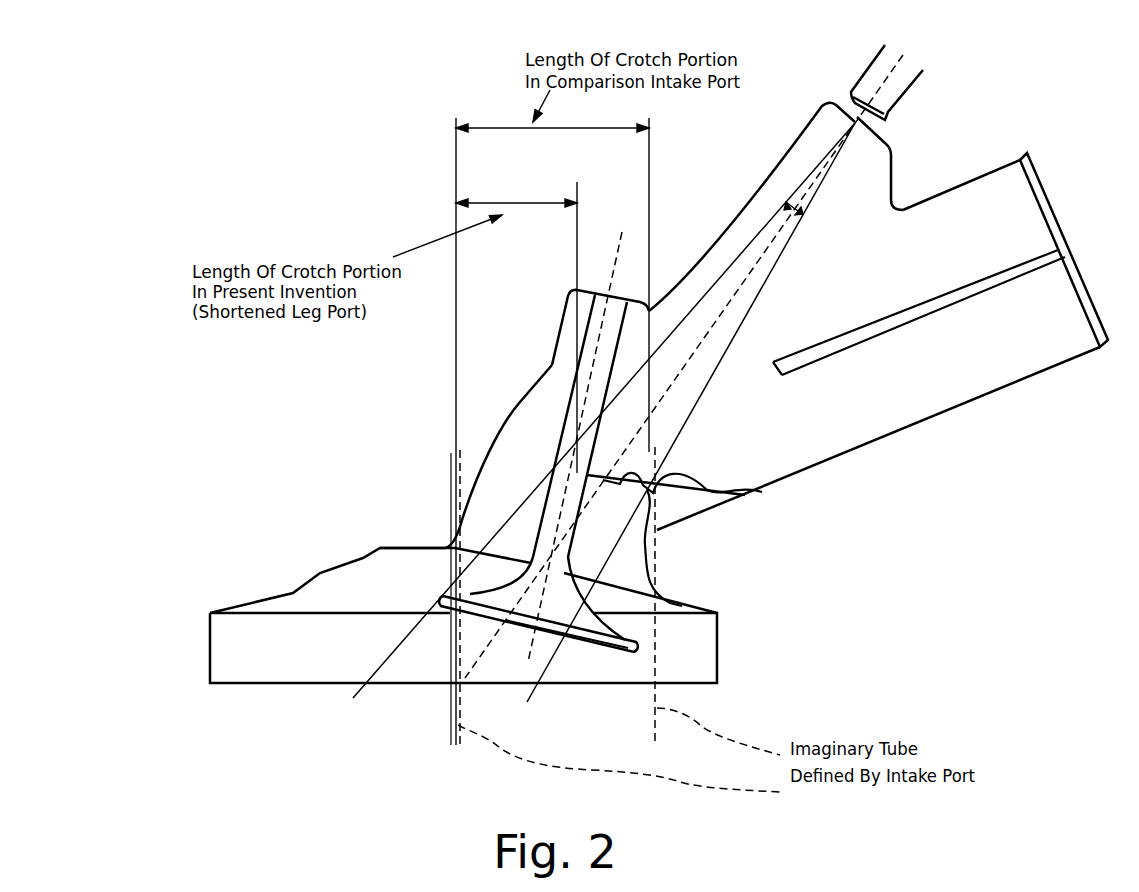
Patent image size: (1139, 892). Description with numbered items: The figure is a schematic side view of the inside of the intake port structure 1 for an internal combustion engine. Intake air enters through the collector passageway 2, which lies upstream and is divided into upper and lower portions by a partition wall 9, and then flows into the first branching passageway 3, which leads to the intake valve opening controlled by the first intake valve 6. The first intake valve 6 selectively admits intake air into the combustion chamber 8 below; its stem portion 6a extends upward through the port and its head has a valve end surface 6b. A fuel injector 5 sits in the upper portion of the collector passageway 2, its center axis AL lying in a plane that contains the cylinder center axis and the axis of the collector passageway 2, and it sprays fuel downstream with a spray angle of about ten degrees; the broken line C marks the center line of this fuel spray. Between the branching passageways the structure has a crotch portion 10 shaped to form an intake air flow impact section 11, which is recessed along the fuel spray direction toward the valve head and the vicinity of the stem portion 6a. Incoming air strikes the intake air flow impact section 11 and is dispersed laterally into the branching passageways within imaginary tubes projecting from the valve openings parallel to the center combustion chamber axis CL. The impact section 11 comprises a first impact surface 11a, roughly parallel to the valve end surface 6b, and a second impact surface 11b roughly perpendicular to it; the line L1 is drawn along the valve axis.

The intake port structure 1 is at (670, 237).
The collector passageway 2 is at (913, 415).
The first branching passageway 3 is at (467, 440).
The fuel injector 5 is at (918, 82).
The first intake valve 6 is at (597, 632).
The stem portion 6a is at (570, 403).
The valve end surface 6b is at (512, 622).
The combustion chamber 8 is at (412, 668).
The partition wall 9 is at (925, 316).
The crotch portion 10 is at (744, 488).
The intake air flow impact section 11 is at (658, 531).
The first impact surface 11a is at (702, 500).
The second impact surface 11b is at (577, 386).
The center axis of fuel injector AL is at (862, 78).
The center combustion chamber axis CL is at (448, 497).
The center line of injected fuel C is at (767, 278).
The valve axis line L1 is at (622, 232).